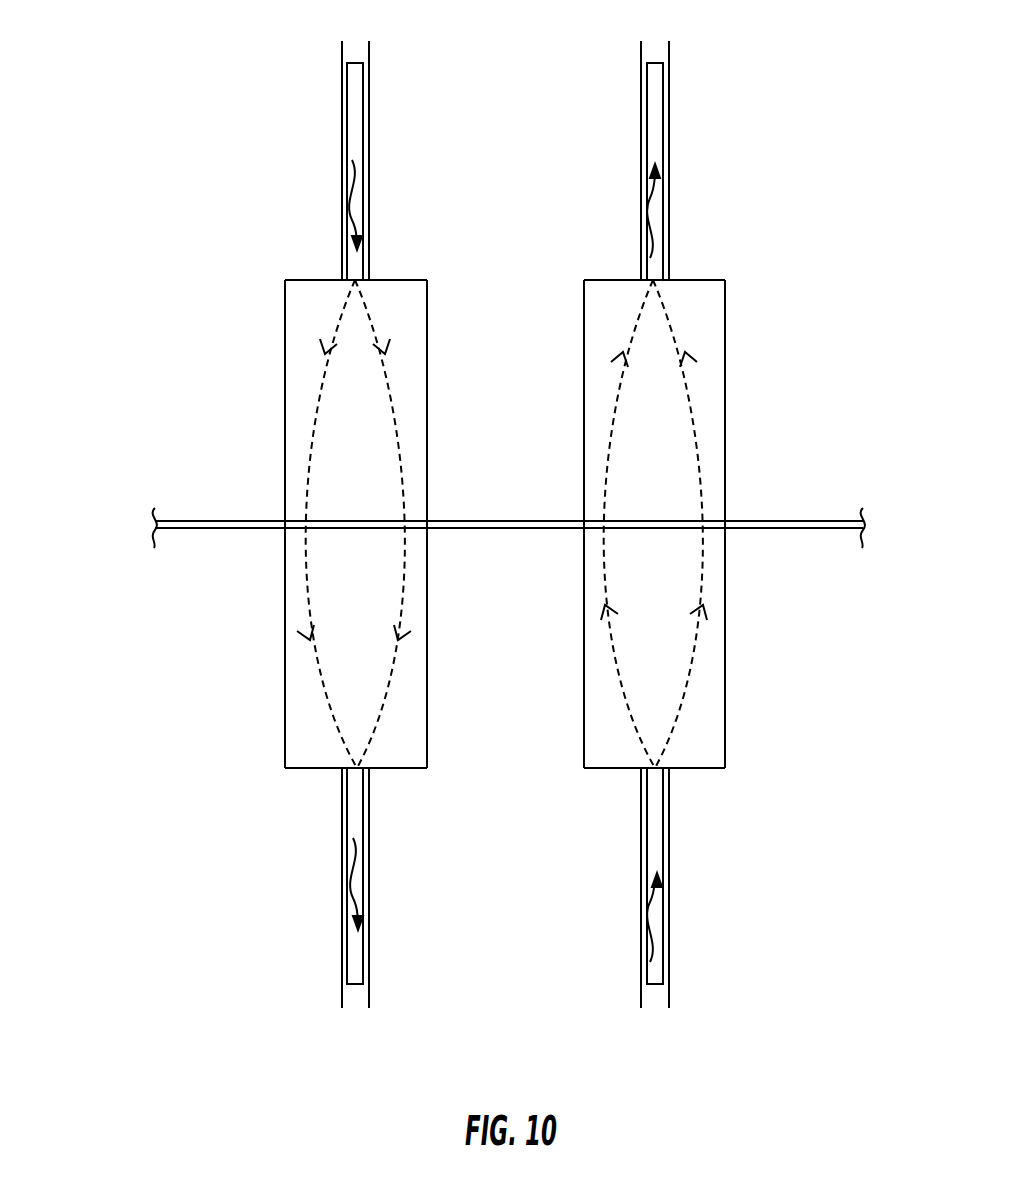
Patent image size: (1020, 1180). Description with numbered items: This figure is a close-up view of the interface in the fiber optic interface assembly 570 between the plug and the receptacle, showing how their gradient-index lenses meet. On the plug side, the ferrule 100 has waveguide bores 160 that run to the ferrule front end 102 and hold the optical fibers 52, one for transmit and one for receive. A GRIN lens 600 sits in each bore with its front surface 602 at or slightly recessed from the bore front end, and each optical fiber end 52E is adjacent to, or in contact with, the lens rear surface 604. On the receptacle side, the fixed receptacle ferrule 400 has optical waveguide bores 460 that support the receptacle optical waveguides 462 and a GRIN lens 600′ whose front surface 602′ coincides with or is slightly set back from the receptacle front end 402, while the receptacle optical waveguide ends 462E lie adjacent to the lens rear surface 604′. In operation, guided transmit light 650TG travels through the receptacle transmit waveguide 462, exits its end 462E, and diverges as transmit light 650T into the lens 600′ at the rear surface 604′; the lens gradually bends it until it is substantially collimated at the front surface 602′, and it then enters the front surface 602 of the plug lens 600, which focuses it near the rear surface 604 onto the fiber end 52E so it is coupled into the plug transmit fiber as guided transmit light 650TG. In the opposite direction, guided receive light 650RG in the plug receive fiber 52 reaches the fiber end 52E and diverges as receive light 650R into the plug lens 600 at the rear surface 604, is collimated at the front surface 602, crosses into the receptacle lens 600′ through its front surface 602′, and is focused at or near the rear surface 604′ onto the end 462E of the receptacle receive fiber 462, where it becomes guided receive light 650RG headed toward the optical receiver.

The fiber optic interface assembly 570 is at (128, 271).
The waveguide bores 160 is at (342, 113).
The optical fibers 52 is at (358, 136).
The guided receive light 650RG is at (352, 216).
The guided transmit light 650TG is at (650, 206).
The optical fiber ends 52E is at (352, 283).
The rear surface 604 is at (412, 280).
The rear surface 604′ is at (393, 770).
The GRIN lens 600 is at (305, 318).
The GRIN lens 600′ is at (300, 692).
The receive light 650R is at (312, 392).
The transmit light 650T is at (695, 396).
The receptacle optical waveguide ends 462E is at (358, 768).
The receptacle optical waveguides 462 is at (355, 823).
The optical waveguide bores 460 is at (342, 946).
The front surface 602 is at (415, 516).
The front surface 602′ is at (297, 527).
The ferrule front end 102 is at (790, 524).
The front end 402 is at (229, 522).
The ferrule 100 is at (521, 368).
The receptacle ferrule 400 is at (521, 643).